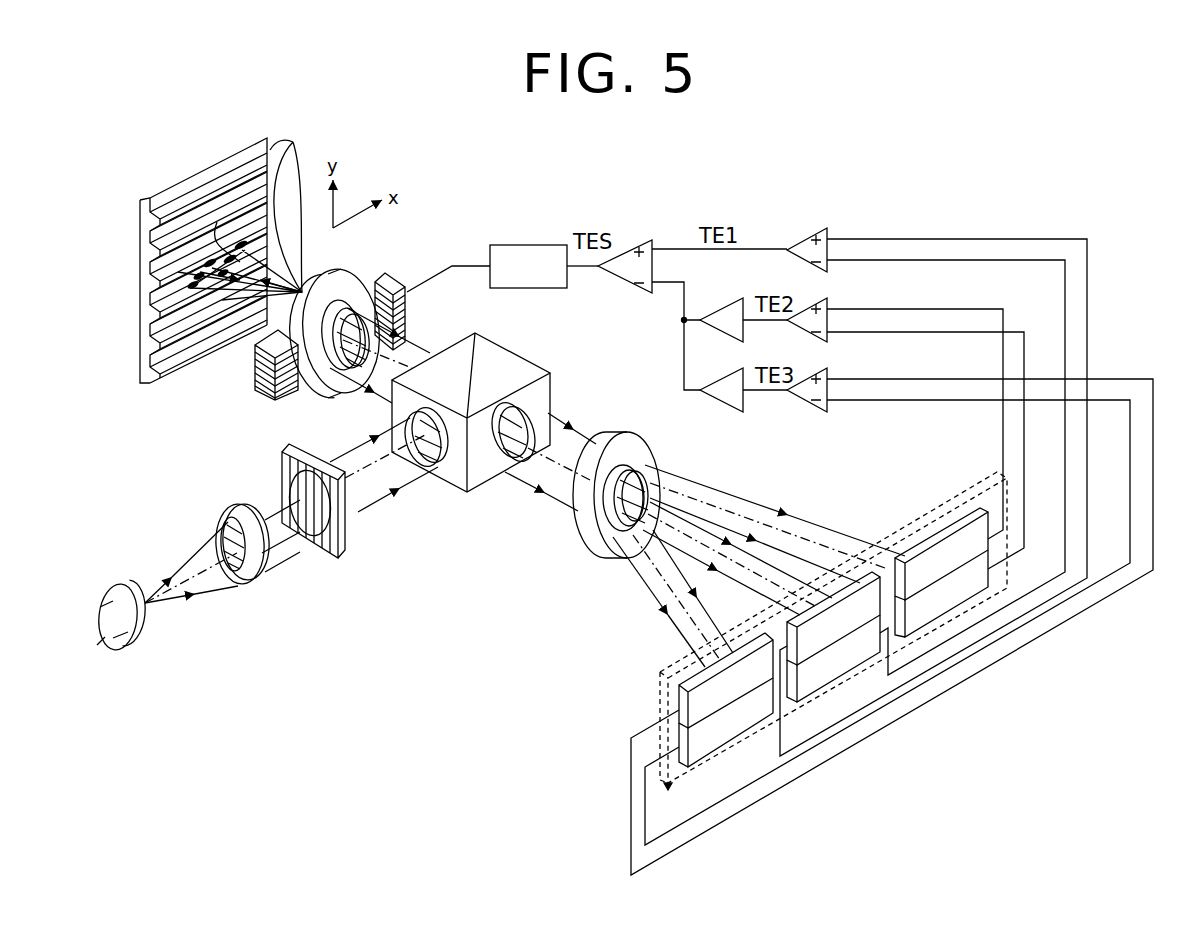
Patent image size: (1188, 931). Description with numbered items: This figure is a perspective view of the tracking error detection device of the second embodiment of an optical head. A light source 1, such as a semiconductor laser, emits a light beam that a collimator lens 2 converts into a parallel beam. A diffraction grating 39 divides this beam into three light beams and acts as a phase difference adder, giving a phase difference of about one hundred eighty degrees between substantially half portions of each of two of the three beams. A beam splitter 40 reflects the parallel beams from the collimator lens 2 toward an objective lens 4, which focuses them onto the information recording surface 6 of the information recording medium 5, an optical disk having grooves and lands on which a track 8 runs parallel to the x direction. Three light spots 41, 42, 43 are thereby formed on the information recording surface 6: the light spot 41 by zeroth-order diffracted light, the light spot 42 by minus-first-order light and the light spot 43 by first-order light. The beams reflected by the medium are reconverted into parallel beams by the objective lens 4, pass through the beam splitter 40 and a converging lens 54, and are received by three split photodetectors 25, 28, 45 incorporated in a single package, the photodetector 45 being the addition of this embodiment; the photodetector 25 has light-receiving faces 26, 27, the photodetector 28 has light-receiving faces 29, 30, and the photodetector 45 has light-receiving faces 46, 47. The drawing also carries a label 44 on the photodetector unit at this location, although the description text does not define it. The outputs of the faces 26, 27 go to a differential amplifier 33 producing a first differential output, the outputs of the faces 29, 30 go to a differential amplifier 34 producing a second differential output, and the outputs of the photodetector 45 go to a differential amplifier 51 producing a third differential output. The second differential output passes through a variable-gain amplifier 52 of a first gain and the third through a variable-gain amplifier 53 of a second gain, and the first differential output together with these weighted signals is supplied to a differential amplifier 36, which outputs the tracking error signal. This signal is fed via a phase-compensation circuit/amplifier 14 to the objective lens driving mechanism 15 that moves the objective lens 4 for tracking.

The light source 1 is at (123, 588).
The collimator lens 2 is at (222, 514).
The objective lens 4 is at (345, 272).
The information recording medium 5 is at (140, 256).
The information recording surface 6 is at (176, 200).
The track 8 is at (289, 210).
The phase-compensation circuit/amplifier 14 is at (530, 245).
The objective lens driving mechanism 15 is at (392, 275).
The split photodetector 25 is at (846, 643).
The light-receiving face 26 is at (858, 603).
The light-receiving face 27 is at (818, 680).
The split photodetector 28 is at (968, 492).
The light-receiving face 29 is at (940, 550).
The light-receiving face 30 is at (932, 604).
The differential amplifier 33 is at (806, 228).
The differential amplifier 34 is at (828, 300).
The differential amplifier 36 is at (626, 238).
The diffraction grating 39 is at (345, 535).
The beam splitter 40 is at (514, 352).
The light spot 41 is at (217, 222).
The light spot 42 is at (165, 302).
The light spot 43 is at (262, 250).
The photodetector 44 is at (937, 583).
The split photodetector 45 is at (671, 746).
The light-receiving face 46 is at (686, 700).
The light-receiving face 47 is at (686, 742).
The differential amplifier 51 is at (828, 370).
The variable-gain amplifier 52 is at (720, 305).
The variable-gain amplifier 53 is at (720, 376).
The converging lens 54 is at (583, 537).